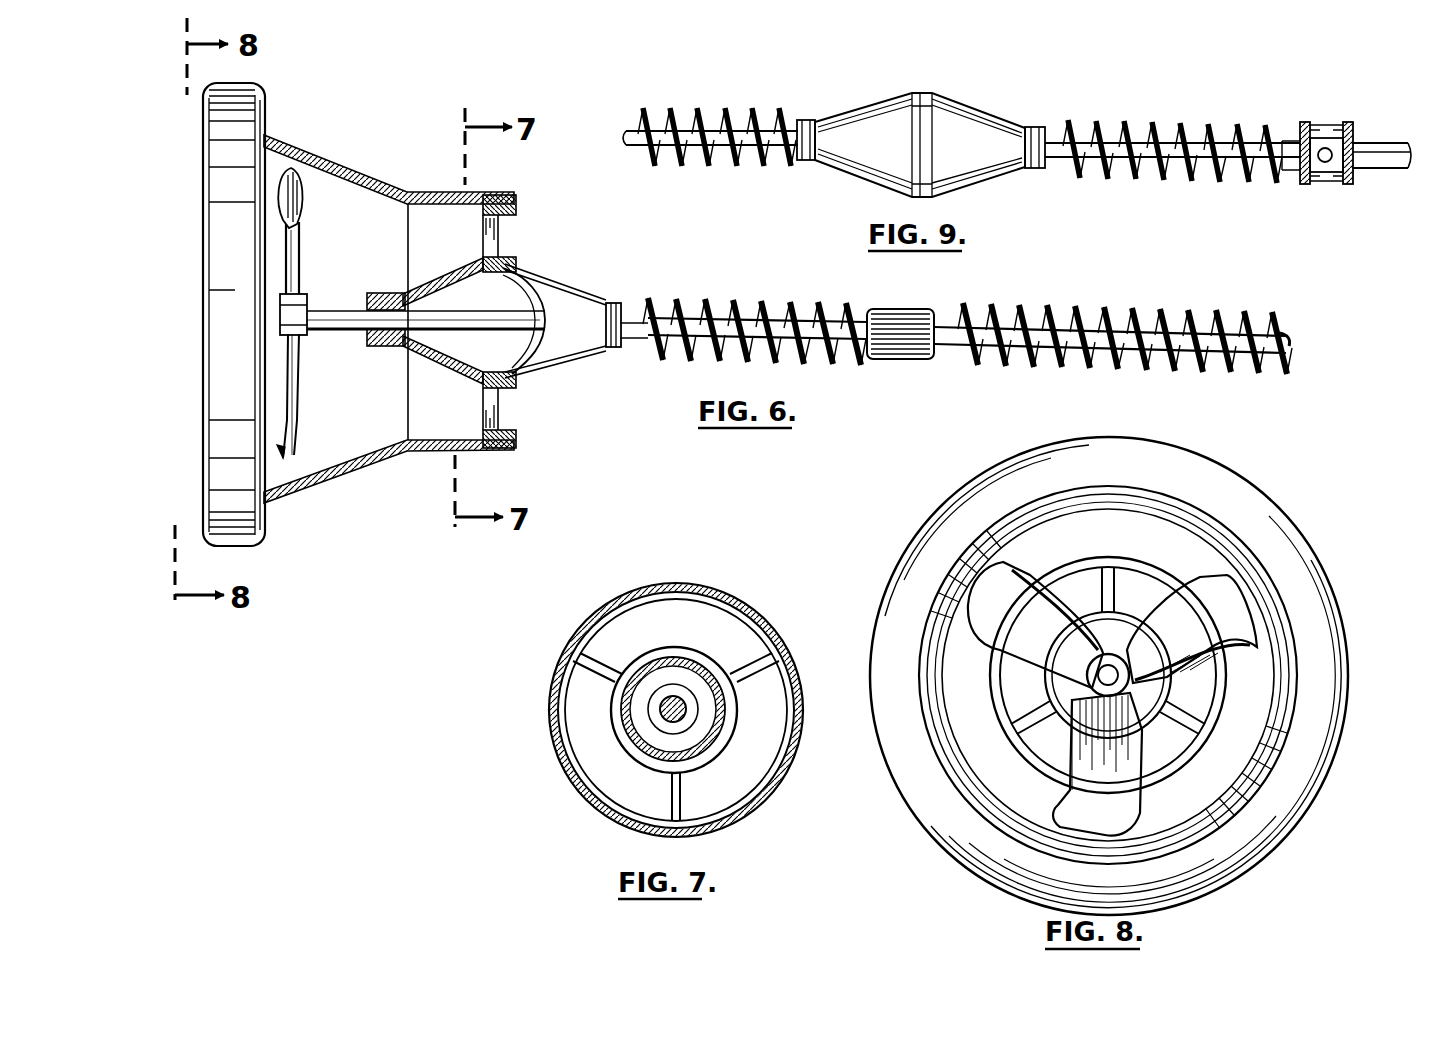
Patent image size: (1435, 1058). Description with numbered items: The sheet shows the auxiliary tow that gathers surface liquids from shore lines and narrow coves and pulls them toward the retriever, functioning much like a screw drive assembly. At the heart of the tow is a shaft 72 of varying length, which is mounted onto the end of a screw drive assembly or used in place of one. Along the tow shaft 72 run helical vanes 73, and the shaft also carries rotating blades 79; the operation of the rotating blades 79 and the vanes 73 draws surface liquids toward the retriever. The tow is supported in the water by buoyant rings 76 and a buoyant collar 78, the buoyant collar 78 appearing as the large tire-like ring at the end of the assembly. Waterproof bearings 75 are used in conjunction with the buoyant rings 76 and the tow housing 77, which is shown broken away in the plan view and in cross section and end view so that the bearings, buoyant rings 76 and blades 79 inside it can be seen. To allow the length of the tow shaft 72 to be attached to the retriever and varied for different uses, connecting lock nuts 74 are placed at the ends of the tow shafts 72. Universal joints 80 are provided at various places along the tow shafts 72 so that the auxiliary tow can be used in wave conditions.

In FIG. 6, the shaft 72 is at (1291, 346).
In FIG. 9, the shaft 72 is at (1250, 138).
In FIG. 7, the shaft 72 is at (684, 716).
In FIG. 8, the shaft 72 is at (1112, 665).
In FIG. 6, the vanes 73 is at (1243, 375).
In FIG. 9, the vanes 73 is at (1228, 180).
In FIG. 6, the connecting lock nuts 74 is at (893, 352).
In FIG. 6, the waterproof bearings 75 is at (367, 336).
In FIG. 9, the waterproof bearings 75 is at (805, 165).
In FIG. 7, the waterproof bearings 75 is at (690, 757).
In FIG. 6, the buoyant rings 76 is at (598, 348).
In FIG. 9, the buoyant rings 76 is at (856, 96).
In FIG. 8, the buoyant rings 76 is at (1112, 632).
In FIG. 6, the tow housing 77 is at (372, 463).
In FIG. 7, the tow housing 77 is at (738, 600).
In FIG. 8, the tow housing 77 is at (1262, 720).
In FIG. 6, the buoyant collar 78 is at (242, 547).
In FIG. 8, the buoyant collar 78 is at (1327, 692).
In FIG. 6, the rotating blades 79 is at (297, 200).
In FIG. 8, the rotating blades 79 is at (1029, 636).
In FIG. 9, the universal joints 80 is at (1332, 121).